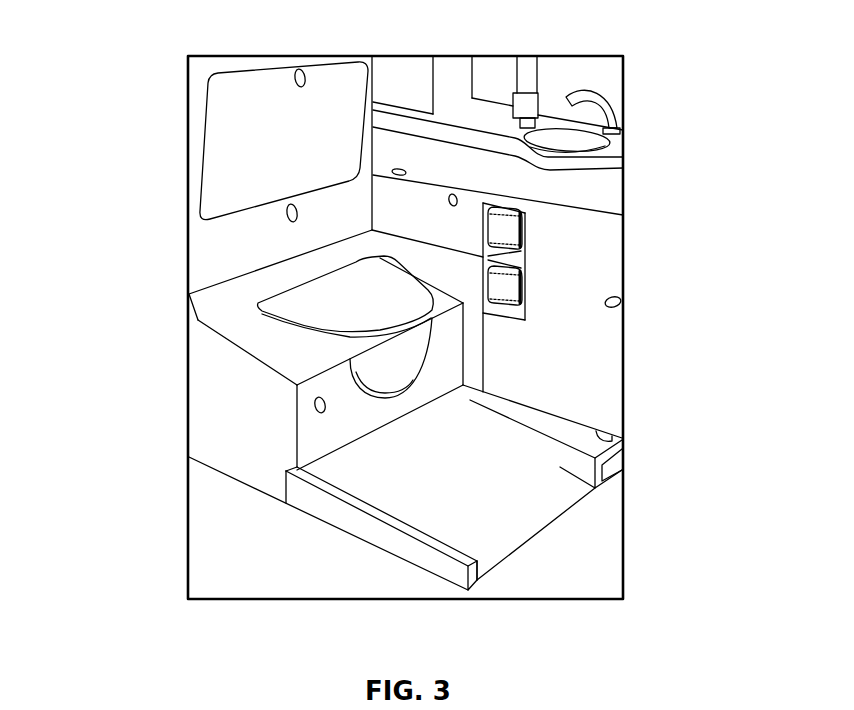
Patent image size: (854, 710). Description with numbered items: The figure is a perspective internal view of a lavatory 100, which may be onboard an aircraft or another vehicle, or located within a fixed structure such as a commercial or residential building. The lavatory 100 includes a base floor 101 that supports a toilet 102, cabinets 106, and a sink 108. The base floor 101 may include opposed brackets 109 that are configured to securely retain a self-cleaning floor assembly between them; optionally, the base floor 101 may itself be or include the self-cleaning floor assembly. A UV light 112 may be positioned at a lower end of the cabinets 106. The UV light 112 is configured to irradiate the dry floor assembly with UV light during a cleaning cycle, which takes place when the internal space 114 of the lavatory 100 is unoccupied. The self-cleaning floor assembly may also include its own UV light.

The lavatory 100 is at (150, 77).
The base floor 101 is at (451, 568).
The toilet 102 is at (318, 296).
The cabinets 106 is at (577, 263).
The sink 108 is at (553, 132).
The opposed brackets 109 is at (608, 468).
The UV light 112 is at (612, 436).
The internal space 114 is at (450, 181).